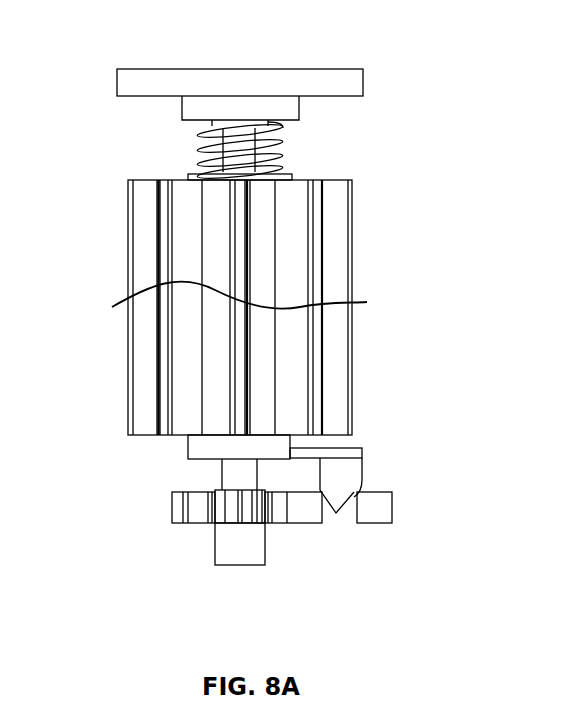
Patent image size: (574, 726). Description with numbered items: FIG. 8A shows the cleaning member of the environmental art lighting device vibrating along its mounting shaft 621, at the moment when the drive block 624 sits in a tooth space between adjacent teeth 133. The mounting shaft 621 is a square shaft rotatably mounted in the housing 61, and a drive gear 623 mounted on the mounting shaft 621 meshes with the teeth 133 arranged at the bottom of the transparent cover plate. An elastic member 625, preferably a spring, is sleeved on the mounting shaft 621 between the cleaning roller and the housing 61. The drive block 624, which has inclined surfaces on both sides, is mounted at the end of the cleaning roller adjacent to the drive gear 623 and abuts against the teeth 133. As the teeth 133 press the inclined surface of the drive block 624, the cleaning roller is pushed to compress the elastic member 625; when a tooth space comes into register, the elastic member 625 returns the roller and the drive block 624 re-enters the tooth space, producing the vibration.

The housing 61 is at (229, 80).
The elastic member 625 is at (200, 136).
The drive gear 623 is at (140, 248).
The mounting shaft 621 is at (228, 478).
The drive block 624 is at (352, 495).
The teeth 133 is at (380, 507).